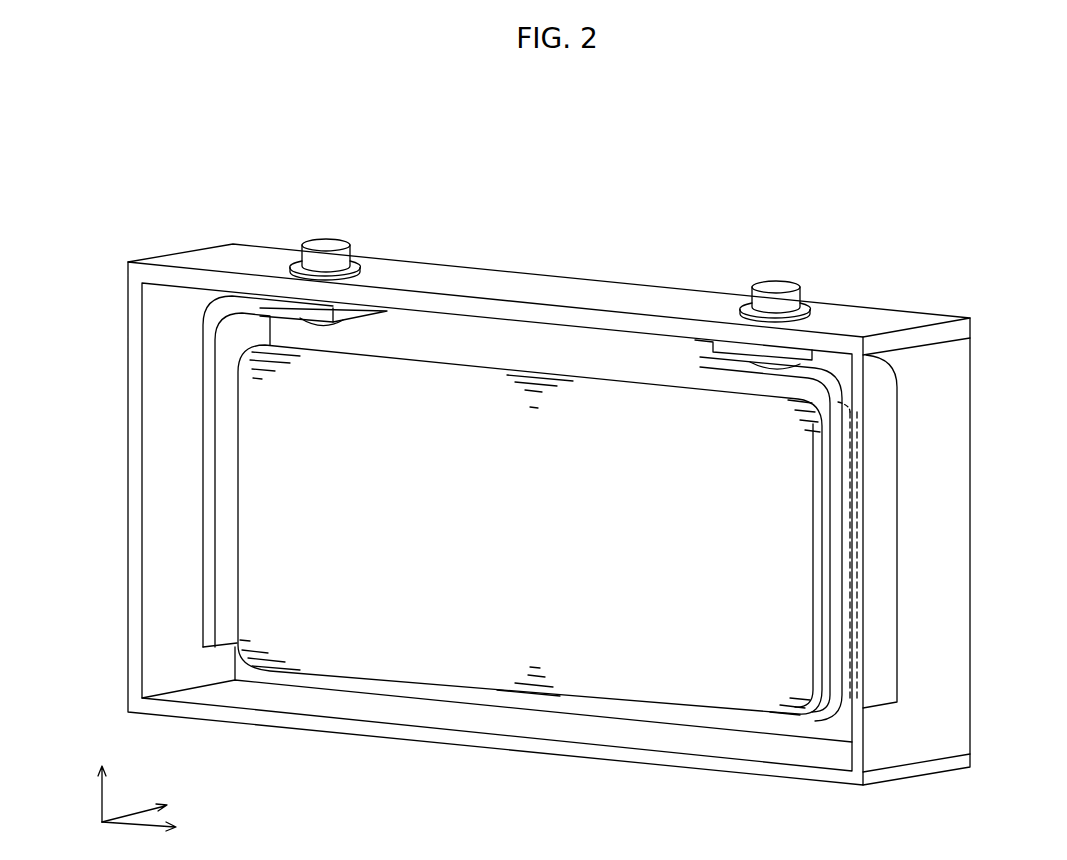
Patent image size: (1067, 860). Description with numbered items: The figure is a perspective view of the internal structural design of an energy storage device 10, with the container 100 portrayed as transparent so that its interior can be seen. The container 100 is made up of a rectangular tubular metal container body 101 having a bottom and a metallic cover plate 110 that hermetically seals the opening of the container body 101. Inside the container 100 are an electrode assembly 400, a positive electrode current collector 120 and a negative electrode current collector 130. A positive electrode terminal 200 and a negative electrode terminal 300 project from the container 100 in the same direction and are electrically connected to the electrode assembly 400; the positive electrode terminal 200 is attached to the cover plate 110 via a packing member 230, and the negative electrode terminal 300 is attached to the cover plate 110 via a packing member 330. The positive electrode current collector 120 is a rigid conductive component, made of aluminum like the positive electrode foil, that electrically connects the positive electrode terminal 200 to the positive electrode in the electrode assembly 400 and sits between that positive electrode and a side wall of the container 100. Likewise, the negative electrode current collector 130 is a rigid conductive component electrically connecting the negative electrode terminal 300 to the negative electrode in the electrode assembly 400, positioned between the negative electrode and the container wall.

The energy storage device 10 is at (895, 232).
The container 100 is at (168, 193).
The container body 101 is at (127, 333).
The cover plate 110 is at (223, 258).
The positive electrode current collector 120 is at (201, 482).
The negative electrode current collector 130 is at (883, 505).
The positive electrode terminal 200 is at (322, 245).
The packing member 230 is at (288, 258).
The negative electrode terminal 300 is at (778, 288).
The packing member 330 is at (747, 305).
The electrode assembly 400 is at (452, 663).